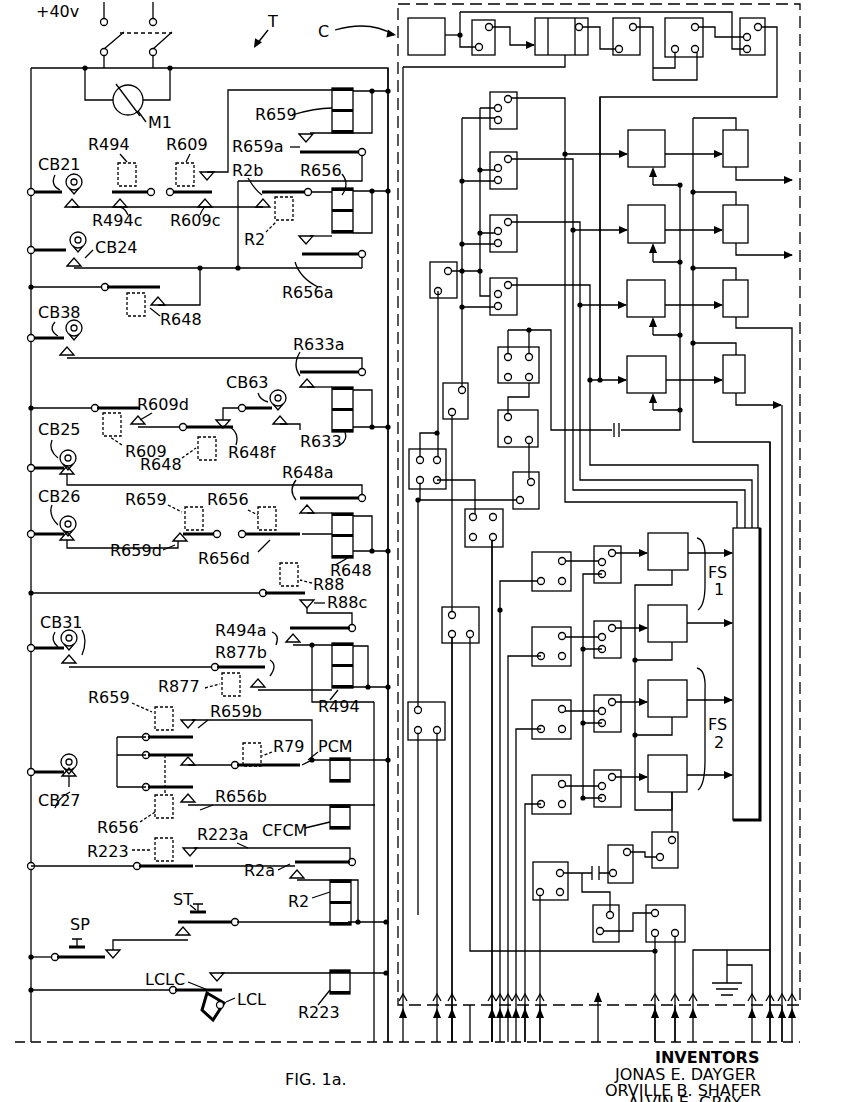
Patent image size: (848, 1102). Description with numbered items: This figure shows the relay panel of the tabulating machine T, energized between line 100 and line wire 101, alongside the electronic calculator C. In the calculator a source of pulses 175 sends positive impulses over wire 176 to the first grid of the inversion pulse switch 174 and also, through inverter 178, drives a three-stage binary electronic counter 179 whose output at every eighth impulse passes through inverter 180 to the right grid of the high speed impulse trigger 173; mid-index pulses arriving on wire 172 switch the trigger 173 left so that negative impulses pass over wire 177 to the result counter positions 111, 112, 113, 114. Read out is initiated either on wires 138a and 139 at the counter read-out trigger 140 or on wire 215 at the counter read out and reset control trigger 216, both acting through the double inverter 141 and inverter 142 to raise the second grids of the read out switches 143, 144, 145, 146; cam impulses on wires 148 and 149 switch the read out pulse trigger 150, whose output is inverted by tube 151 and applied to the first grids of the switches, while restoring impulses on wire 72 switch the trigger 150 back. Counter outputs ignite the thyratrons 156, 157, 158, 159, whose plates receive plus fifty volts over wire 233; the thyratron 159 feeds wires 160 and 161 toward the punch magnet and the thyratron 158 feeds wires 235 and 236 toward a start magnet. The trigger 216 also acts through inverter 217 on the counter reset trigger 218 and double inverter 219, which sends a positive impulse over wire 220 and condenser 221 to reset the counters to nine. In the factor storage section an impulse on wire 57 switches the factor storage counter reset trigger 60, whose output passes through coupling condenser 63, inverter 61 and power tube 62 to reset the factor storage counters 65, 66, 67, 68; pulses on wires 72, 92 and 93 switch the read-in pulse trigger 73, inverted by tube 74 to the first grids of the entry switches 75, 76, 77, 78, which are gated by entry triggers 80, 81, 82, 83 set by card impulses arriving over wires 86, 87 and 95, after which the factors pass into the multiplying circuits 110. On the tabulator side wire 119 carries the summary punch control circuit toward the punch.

The line 100 is at (33, 1002).
The line wire 101 is at (388, 290).
The wire 119 is at (374, 1026).
The wire 172 is at (400, 160).
The source of pulses 175 is at (418, 58).
The inverter 178 is at (478, 58).
The three-stage binary electronic counter 179 is at (566, 57).
The inverter 180 is at (630, 57).
The high speed impulse trigger 173 is at (700, 52).
The inversion pulse switch 174 is at (746, 52).
The wire 176 is at (722, 62).
The wire 177 is at (599, 140).
The read out switch 143 is at (511, 104).
The read out switch 144 is at (517, 175).
The read out switch 145 is at (512, 228).
The read out switch 146 is at (505, 316).
The inverter 142 is at (436, 264).
The units result counter 111 is at (645, 134).
The tens result counter 112 is at (640, 208).
The hundreds result counter 113 is at (640, 282).
The thousands result counter 114 is at (635, 360).
The thyratron 156 is at (748, 140).
The thyratron 157 is at (748, 212).
The thyratron 158 is at (748, 286).
The thyratron 159 is at (746, 362).
The wire 160 is at (780, 406).
The wire 235 is at (792, 356).
The wire 233 is at (770, 850).
The condenser 221 is at (619, 436).
The wire 220 is at (531, 330).
The double inverter 219 is at (498, 372).
The counter reset trigger 218 is at (498, 463).
The inverter 217 is at (540, 498).
The tube 151 is at (466, 402).
The double inverter 141 is at (446, 470).
The counter read-out trigger 140 is at (504, 528).
The read out pulse trigger 150 is at (470, 603).
The counter read out and reset control trigger 216 is at (424, 741).
The wire 215 is at (437, 912).
The wire 149 is at (452, 858).
The wire 139 is at (492, 778).
The wire 95 is at (502, 612).
The entry trigger 80 is at (550, 553).
The entry trigger 81 is at (550, 628).
The entry trigger 82 is at (550, 700).
The entry trigger 83 is at (552, 777).
The wire 87 is at (527, 823).
The entry switch 75 is at (600, 548).
The entry switch 76 is at (604, 624).
The entry switch 77 is at (604, 698).
The entry switch 78 is at (604, 773).
The factor storage counter 65 is at (664, 532).
The factor storage counter 66 is at (655, 606).
The factor storage counter 67 is at (652, 704).
The factor storage counter 68 is at (677, 792).
The multiplying circuits 110 is at (750, 822).
The factor storage counter reset trigger 60 is at (546, 862).
The inverter 61 is at (633, 868).
The power tube 62 is at (670, 868).
The coupling condenser 63 is at (598, 866).
The read-in pulse trigger 73 is at (688, 933).
The inverter 74 is at (592, 930).
The wire 92 is at (596, 997).
The wire 236 is at (786, 1022).
The wire 161 is at (780, 1035).
The wire 93 is at (674, 1019).
The wire 72 is at (655, 1035).
The wire 57 is at (545, 1015).
The wire 86 is at (528, 1033).
The wire 148 is at (449, 1030).
The wire 138a is at (488, 1030).